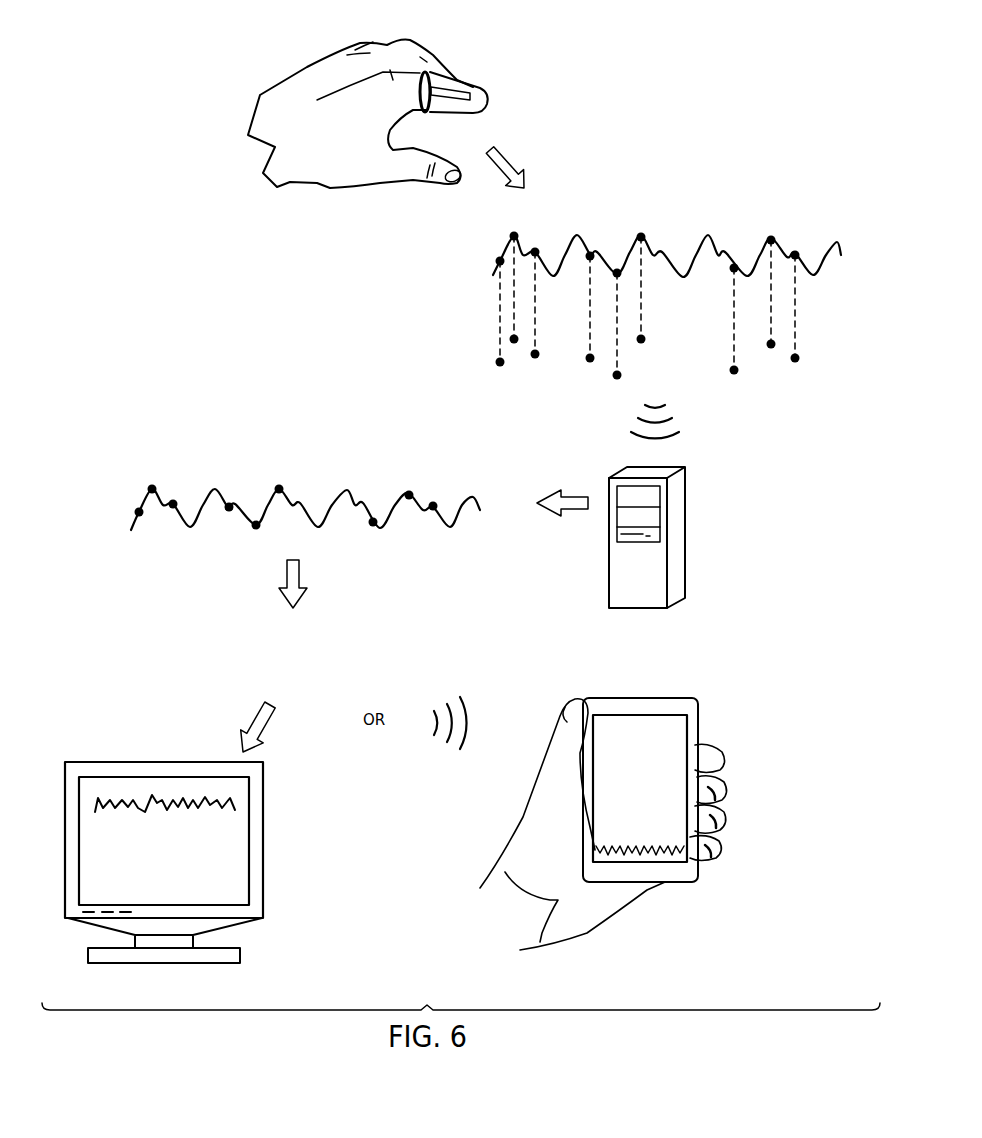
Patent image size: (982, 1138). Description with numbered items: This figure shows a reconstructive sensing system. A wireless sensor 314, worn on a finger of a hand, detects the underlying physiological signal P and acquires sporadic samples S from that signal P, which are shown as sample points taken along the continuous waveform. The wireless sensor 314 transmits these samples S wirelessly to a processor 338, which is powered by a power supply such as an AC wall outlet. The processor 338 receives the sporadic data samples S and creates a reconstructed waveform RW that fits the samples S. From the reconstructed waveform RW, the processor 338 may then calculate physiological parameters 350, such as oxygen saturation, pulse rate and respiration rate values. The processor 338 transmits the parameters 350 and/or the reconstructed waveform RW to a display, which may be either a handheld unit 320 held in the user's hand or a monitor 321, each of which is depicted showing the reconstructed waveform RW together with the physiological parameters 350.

The wireless sensor 314 is at (483, 84).
The physiological signal P is at (836, 238).
The sporadic samples S is at (798, 370).
The processor 338 is at (685, 510).
The reconstructed waveform RW is at (112, 507).
The physiological parameters 350 is at (244, 647).
The handheld unit 320 is at (620, 697).
The monitor 321 is at (249, 890).